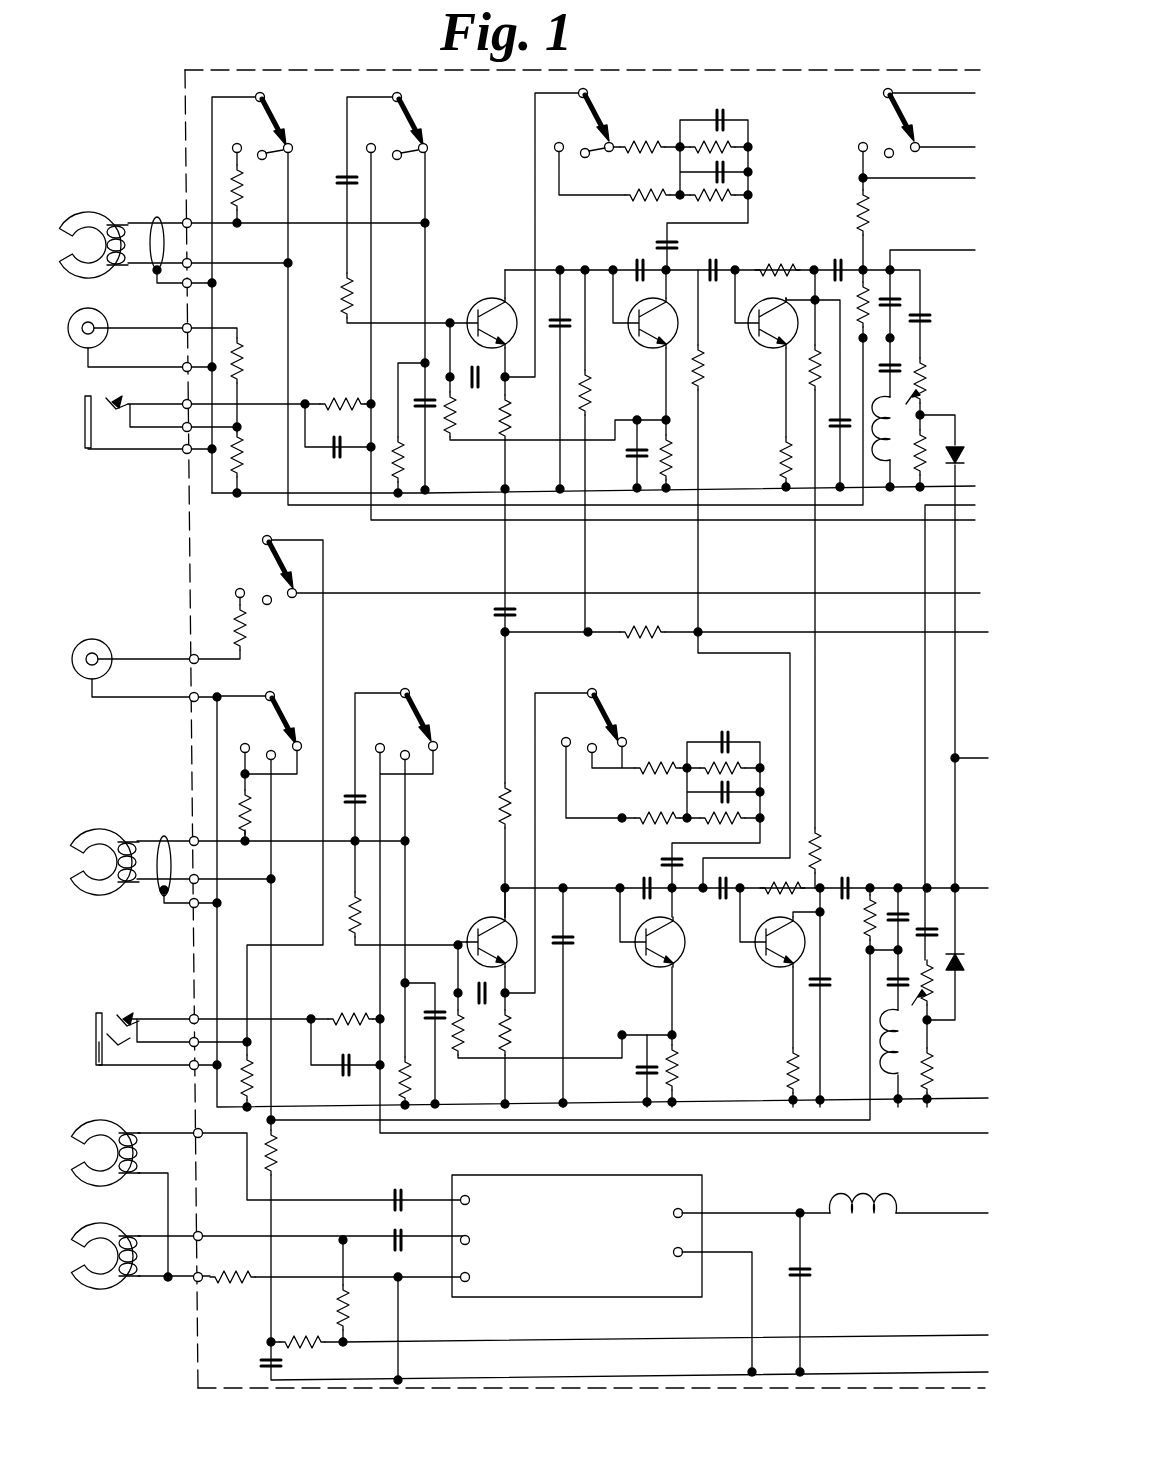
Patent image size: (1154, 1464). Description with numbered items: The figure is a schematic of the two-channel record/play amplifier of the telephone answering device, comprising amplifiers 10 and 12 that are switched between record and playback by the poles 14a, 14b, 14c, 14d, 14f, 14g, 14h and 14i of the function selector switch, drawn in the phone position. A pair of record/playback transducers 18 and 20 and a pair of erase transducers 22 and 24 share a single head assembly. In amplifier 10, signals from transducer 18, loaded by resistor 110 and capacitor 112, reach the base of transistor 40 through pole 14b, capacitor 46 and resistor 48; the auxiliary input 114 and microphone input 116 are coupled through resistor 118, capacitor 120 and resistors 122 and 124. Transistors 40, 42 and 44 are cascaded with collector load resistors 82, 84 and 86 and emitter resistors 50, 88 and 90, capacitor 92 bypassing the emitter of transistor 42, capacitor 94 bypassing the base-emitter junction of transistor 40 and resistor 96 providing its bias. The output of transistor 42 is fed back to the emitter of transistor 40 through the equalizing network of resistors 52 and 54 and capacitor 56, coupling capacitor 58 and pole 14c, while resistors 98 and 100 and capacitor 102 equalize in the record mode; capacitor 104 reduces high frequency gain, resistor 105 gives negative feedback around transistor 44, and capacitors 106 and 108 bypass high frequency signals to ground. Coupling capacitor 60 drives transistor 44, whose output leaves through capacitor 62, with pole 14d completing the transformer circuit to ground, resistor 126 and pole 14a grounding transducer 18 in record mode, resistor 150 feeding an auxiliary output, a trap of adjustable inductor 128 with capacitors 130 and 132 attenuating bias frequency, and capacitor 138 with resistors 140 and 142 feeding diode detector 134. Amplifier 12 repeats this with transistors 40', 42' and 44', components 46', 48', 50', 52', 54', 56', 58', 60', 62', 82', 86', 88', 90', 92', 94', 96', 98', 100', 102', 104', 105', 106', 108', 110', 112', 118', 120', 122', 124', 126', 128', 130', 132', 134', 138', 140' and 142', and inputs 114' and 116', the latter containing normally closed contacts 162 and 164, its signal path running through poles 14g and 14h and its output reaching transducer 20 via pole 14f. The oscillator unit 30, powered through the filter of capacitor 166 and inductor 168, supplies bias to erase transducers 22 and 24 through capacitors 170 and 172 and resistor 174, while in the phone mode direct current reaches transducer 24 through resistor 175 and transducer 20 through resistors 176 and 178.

The amplifier 10 is at (792, 42).
The amplifier 12 is at (885, 705).
The switch pole 14a is at (305, 105).
The switch pole 14b is at (438, 113).
The switch pole 14c is at (607, 98).
The switch pole 14d is at (862, 112).
The switch pole 14f is at (300, 682).
The switch pole 14g is at (250, 572).
The switch pole 14h is at (440, 690).
The switch pole 14i is at (626, 702).
The record/playback transducer 18 is at (100, 210).
The record/playback transducer 20 is at (106, 828).
The erase transducer 22 is at (96, 1120).
The erase transducer 24 is at (90, 1292).
The oscillator unit 30 is at (556, 1300).
The transistor 40 is at (482, 310).
The transistor 42 is at (638, 331).
The transistor 44 is at (758, 326).
The capacitor 46 is at (328, 197).
The resistor 48 is at (326, 295).
The resistor 50 is at (521, 417).
The resistor 52 is at (642, 127).
The resistor 54 is at (738, 131).
The capacitor 56 is at (736, 101).
The coupling capacitor 58 is at (647, 241).
The coupling capacitor 60 is at (702, 254).
The coupling capacitor 62 is at (823, 251).
The collector load resistor 82 is at (608, 392).
The collector load resistor 84 is at (703, 380).
The collector load resistor 86 is at (786, 373).
The emitter resistor 88 is at (692, 457).
The emitter resistor 90 is at (770, 459).
The emitter bypass capacitor 92 is at (619, 465).
The capacitor 94 is at (466, 414).
The resistor 96 is at (459, 421).
The resistor 98 is at (624, 208).
The resistor 100 is at (746, 198).
The capacitor 102 is at (760, 165).
The capacitor 104 is at (594, 257).
The resistor 105 is at (767, 252).
The capacitor 106 is at (526, 282).
The capacitor 108 is at (794, 421).
The resistor 110 is at (382, 495).
The capacitor 112 is at (406, 369).
The auxiliary input 114 is at (109, 319).
The microphone input 116 is at (98, 448).
The resistor 118 is at (334, 384).
The capacitor 120 is at (321, 460).
The resistor 122 is at (257, 449).
The resistor 124 is at (241, 336).
The resistor 126 is at (255, 191).
The adjustable inductor 128 is at (874, 383).
The capacitor 130 is at (924, 343).
The capacitor 132 is at (923, 282).
The diode detector 134 is at (949, 421).
The capacitor 138 is at (939, 302).
The resistor 140 is at (939, 373).
The resistor 142 is at (901, 491).
The resistor 150 is at (868, 214).
The normally closed contact 162 is at (128, 1068).
The normally closed contact 164 is at (138, 1025).
The capacitor 166 is at (812, 1272).
The inductor 168 is at (862, 1196).
The capacitor 170 is at (392, 1192).
The capacitor 172 is at (390, 1235).
The resistor 174 is at (222, 1285).
The resistor 175 is at (346, 1310).
The resistor 176 is at (312, 1335).
The resistor 178 is at (276, 1172).
The auxiliary input 114' is at (114, 647).
The microphone input 116' is at (100, 1012).
The resistor 124' is at (266, 627).
The resistor 126' is at (279, 808).
The capacitor 46' is at (320, 814).
The resistor 48' is at (320, 914).
The collector load resistor 82' is at (479, 803).
The resistor 118' is at (339, 1000).
The capacitor 120' is at (340, 1104).
The resistor 122' is at (281, 1077).
The capacitor 112' is at (432, 960).
The resistor 110' is at (422, 1110).
The transistor 40' is at (487, 920).
The capacitor 94' is at (475, 1032).
The resistor 96' is at (464, 1036).
The resistor 50' is at (505, 1032).
The capacitor 106' is at (586, 965).
The capacitor 104' is at (605, 877).
The coupling capacitor 58' is at (650, 850).
The coupling capacitor 60' is at (709, 900).
The resistor 105' is at (746, 915).
The resistor 52' is at (660, 743).
The resistor 54' is at (736, 741).
The capacitor 56' is at (713, 716).
The capacitor 102' is at (676, 795).
The resistor 100' is at (784, 796).
The resistor 98' is at (615, 831).
The transistor 42' is at (675, 961).
The emitter bypass capacitor 92' is at (618, 1080).
The emitter resistor 88' is at (693, 1064).
The transistor 44' is at (769, 957).
The capacitor 108' is at (782, 1003).
The emitter resistor 90' is at (772, 1070).
The collector load resistor 86' is at (835, 840).
The coupling capacitor 62' is at (859, 870).
The capacitor 132' is at (902, 885).
The adjustable inductor 128' is at (863, 990).
The capacitor 138' is at (883, 972).
The capacitor 130' is at (869, 1011).
The resistor 140' is at (922, 982).
The diode detector 134' is at (954, 1003).
The resistor 142' is at (927, 1106).